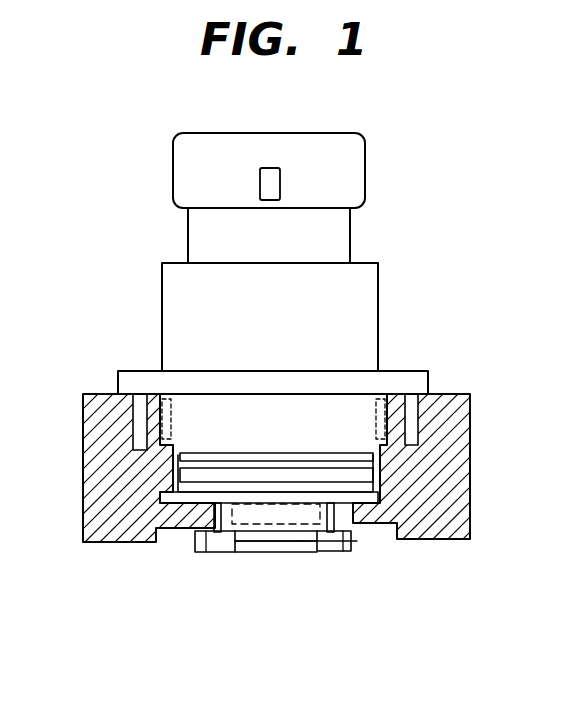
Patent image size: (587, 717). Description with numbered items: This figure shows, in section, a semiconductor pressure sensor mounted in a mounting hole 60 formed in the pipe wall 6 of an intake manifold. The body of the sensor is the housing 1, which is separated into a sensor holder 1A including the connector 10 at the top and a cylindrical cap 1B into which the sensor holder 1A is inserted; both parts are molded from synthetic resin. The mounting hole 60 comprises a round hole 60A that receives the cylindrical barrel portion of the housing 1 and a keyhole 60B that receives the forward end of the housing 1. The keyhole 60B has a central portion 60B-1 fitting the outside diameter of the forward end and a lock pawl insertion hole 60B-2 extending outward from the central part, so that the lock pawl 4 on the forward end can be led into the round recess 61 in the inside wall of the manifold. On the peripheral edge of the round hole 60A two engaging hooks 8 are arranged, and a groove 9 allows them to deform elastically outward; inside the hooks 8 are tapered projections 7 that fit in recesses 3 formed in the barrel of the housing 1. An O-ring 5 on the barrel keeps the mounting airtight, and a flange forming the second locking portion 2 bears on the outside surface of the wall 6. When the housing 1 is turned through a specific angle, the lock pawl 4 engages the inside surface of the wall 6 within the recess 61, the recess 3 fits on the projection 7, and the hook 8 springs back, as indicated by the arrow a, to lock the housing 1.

The sensor housing 1 is at (473, 205).
The sensor holder 1A is at (337, 233).
The cylindrical cap 1B is at (338, 297).
The connector 10 is at (327, 163).
The second locking portion 2 is at (119, 372).
The recess 3 is at (393, 430).
The lock pawl 4 is at (232, 547).
The O-ring 5 is at (176, 492).
The pipe wall 6 is at (103, 483).
The tapered projection 7 is at (408, 391).
The engaging hook 8 is at (388, 452).
The groove 9 is at (148, 424).
The mounting hole 60 is at (178, 470).
The round hole 60A is at (388, 450).
The keyhole 60B is at (387, 632).
The central portion 60B-1 is at (358, 545).
The lock pawl insertion hole 60B-2 is at (297, 553).
The round recess 61 is at (163, 546).
The arrow a is at (187, 447).